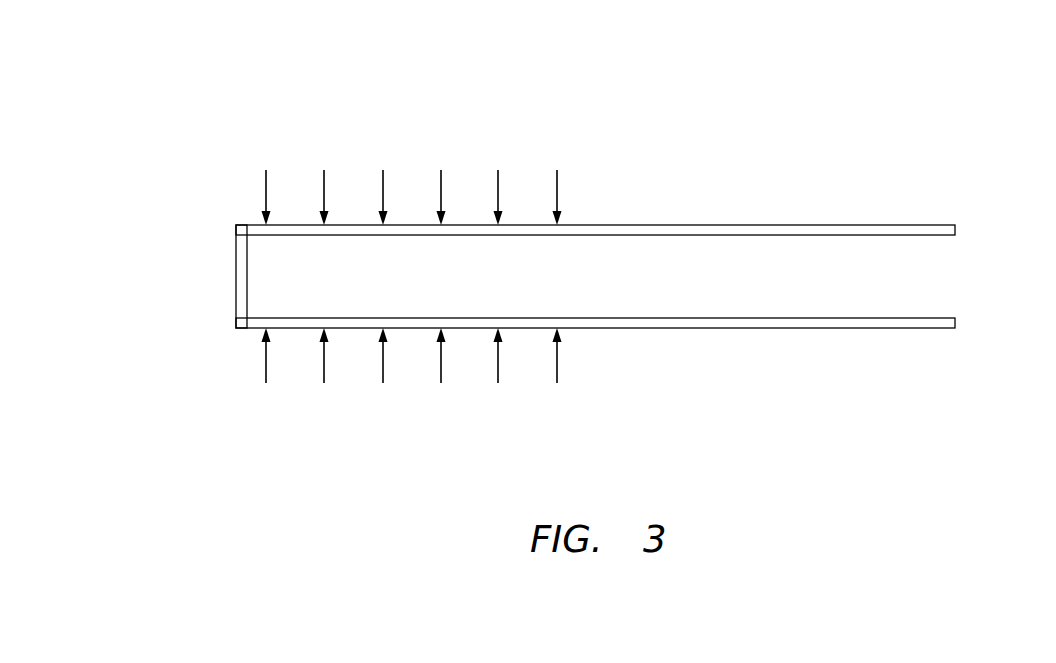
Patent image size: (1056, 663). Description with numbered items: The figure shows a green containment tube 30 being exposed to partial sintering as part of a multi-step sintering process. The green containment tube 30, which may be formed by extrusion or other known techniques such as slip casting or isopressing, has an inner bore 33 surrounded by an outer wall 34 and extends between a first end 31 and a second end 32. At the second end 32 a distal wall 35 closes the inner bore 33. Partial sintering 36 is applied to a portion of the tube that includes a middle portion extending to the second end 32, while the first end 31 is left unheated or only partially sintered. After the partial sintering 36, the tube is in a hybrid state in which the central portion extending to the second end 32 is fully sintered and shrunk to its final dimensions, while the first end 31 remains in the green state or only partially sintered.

The green containment tube 30 is at (813, 70).
The first end 31 is at (967, 230).
The second end 32 is at (232, 228).
The inner bore 33 is at (566, 286).
The outer wall 34 is at (733, 328).
The distal wall 35 is at (236, 291).
The partial sintering 36 is at (383, 188).